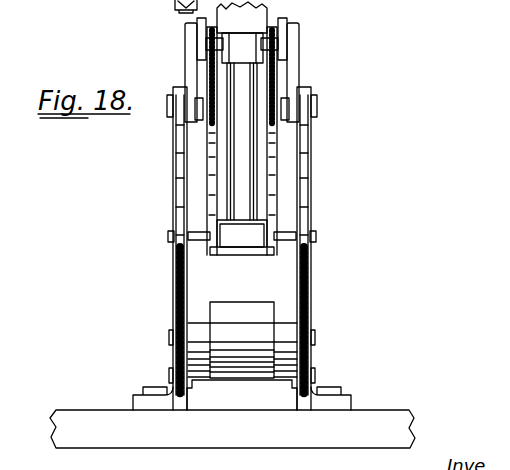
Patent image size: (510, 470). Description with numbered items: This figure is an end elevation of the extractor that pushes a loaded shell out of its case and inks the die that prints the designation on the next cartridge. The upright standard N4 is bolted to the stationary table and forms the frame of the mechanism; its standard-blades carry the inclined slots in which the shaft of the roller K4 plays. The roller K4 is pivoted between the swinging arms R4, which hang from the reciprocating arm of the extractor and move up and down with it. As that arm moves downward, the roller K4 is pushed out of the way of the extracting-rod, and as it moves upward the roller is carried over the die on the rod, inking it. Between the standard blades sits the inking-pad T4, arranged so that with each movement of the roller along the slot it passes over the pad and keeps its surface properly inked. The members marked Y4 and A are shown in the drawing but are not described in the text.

The standard N4 is at (328, 152).
The swinging arms R4 is at (328, 192).
The connecting rods Y4 is at (238, 141).
The roller K4 is at (238, 243).
The inking-pad T4 is at (242, 340).
The base A is at (232, 429).